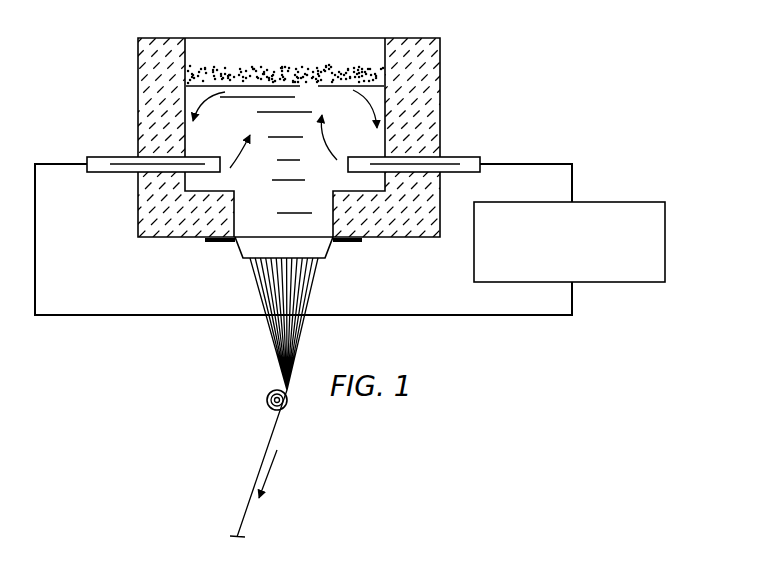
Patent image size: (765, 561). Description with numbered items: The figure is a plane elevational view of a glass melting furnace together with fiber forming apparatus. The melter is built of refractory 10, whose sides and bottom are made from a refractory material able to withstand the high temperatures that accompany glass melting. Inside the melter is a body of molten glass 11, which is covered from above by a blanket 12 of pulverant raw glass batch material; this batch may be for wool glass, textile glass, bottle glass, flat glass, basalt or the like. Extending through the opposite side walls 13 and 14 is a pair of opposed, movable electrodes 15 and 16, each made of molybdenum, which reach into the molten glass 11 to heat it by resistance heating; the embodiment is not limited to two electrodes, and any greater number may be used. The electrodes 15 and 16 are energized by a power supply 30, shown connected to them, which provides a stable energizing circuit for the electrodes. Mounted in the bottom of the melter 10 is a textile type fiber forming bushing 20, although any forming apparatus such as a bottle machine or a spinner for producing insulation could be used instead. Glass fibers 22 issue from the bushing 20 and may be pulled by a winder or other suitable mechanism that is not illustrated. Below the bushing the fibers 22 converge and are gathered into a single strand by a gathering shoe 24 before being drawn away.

The refractory melter 10 is at (316, 122).
The body of molten glass 11 is at (352, 133).
The blanket of pulverant raw glass batch material 12 is at (285, 72).
The side wall 13 is at (150, 68).
The side wall 14 is at (437, 73).
The movable electrode 15 is at (113, 156).
The movable electrode 16 is at (456, 156).
The fiber forming bushing 20 is at (290, 229).
The glass fibers 22 is at (296, 272).
The gathering shoe 24 is at (268, 392).
The power supply 30 is at (638, 201).